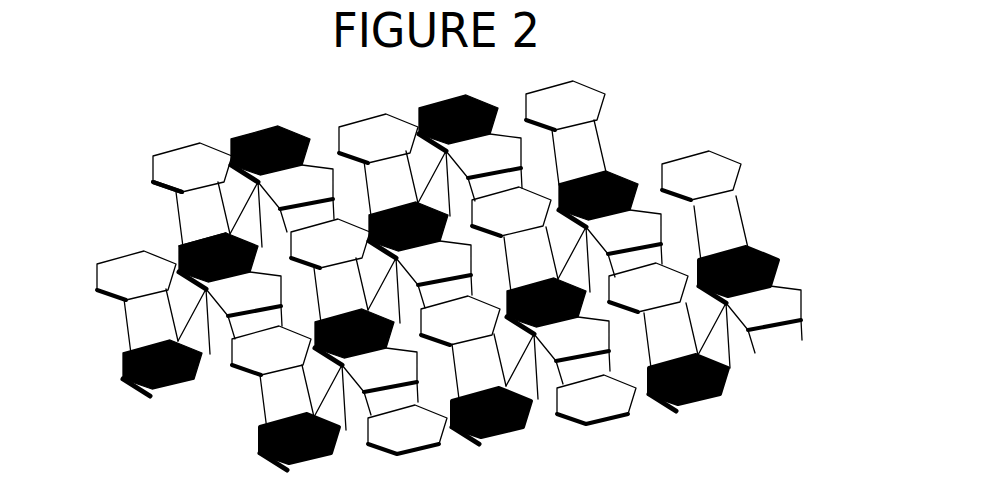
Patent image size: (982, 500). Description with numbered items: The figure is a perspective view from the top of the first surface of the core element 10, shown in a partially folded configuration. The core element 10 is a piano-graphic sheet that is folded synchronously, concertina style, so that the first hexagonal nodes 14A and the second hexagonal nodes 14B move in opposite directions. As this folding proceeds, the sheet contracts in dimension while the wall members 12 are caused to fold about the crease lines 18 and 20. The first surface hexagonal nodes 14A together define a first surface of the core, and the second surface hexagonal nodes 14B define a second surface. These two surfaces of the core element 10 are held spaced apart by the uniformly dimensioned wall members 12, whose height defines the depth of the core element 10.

The core element 10 is at (742, 116).
The wall members 12 is at (283, 386).
The first hexagonal nodes 14A is at (375, 130).
The second hexagonal nodes 14B is at (262, 138).
The crease line 18 is at (182, 192).
The crease line 20 is at (200, 237).